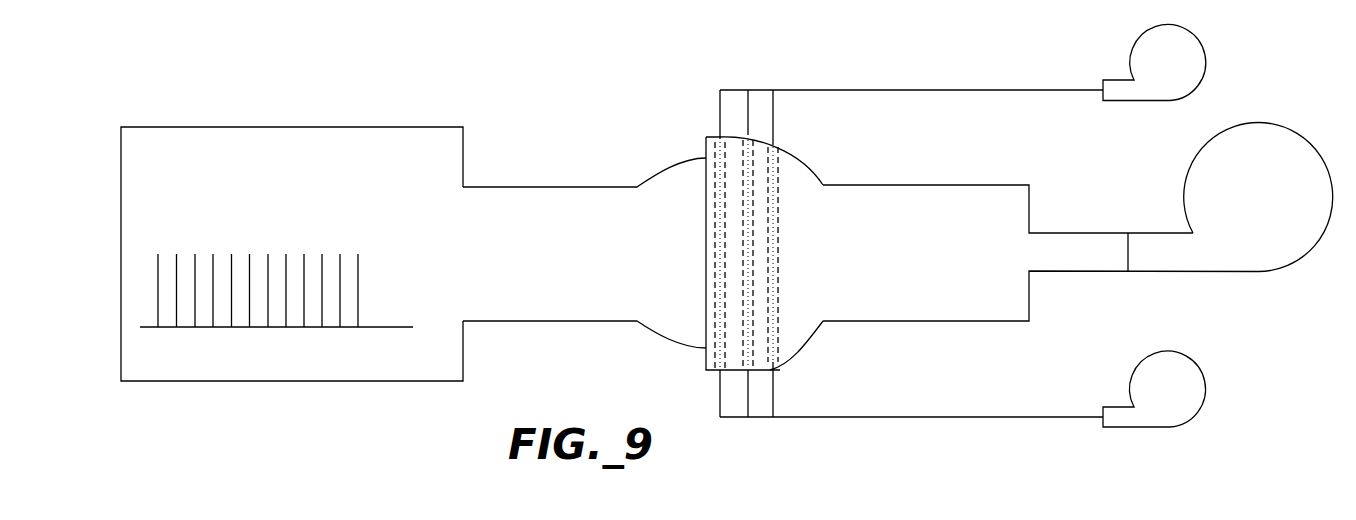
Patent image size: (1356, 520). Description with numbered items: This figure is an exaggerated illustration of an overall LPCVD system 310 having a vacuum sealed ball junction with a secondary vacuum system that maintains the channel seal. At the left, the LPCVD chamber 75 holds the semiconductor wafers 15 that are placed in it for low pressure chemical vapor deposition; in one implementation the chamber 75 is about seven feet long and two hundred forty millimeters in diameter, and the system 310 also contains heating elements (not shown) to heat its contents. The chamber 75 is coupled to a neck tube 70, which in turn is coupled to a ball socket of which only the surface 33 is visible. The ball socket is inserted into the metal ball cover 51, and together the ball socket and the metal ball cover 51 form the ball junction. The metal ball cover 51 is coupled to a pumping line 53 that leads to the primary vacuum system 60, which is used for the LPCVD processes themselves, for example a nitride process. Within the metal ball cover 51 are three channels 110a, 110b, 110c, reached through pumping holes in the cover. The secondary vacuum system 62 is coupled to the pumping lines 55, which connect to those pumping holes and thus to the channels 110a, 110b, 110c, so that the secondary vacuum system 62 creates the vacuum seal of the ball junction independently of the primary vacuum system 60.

The LPCVD system 310 is at (221, 98).
The LPCVD chamber 75 is at (297, 372).
The semiconductor wafers 15 is at (268, 249).
The surface of ball socket 33 is at (672, 177).
The neck tube 70 is at (594, 316).
The metal ball cover 51 is at (797, 177).
The channel 110a is at (718, 222).
The channel 110b is at (748, 275).
The channel 110c is at (775, 216).
The pumping line 53 is at (935, 184).
The primary vacuum system 60 is at (1240, 268).
The pumping lines 55 is at (806, 90).
The secondary vacuum system 62 is at (1173, 89).